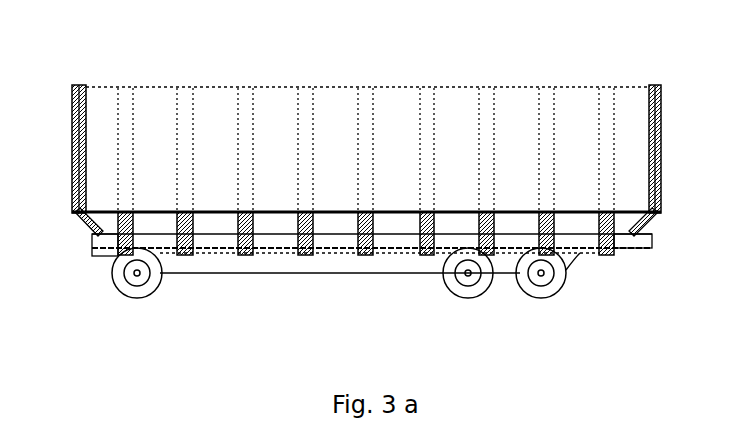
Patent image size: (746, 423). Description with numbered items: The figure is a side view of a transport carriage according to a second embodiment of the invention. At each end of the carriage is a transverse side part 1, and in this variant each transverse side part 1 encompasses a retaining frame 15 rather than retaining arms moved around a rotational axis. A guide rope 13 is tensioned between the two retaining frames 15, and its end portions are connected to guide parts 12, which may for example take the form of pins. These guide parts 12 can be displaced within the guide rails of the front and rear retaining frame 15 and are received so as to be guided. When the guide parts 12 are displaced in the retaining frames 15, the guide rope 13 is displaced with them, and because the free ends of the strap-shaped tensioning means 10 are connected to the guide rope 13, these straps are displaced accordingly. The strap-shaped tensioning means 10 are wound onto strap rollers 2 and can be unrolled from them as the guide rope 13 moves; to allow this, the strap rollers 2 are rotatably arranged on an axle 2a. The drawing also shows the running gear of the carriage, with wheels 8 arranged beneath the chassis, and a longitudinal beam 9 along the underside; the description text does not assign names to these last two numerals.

The transverse side parts 1 is at (72, 133).
The strap rollers 2 is at (247, 250).
The axle 2a is at (280, 251).
The wheel 8 is at (137, 298).
The longitudinal beam 9 is at (403, 248).
The strap-shaped tensioning means 10 is at (252, 133).
The guide parts 12 is at (73, 86).
The guide rope 13 is at (459, 86).
The retaining frame 15 is at (72, 170).